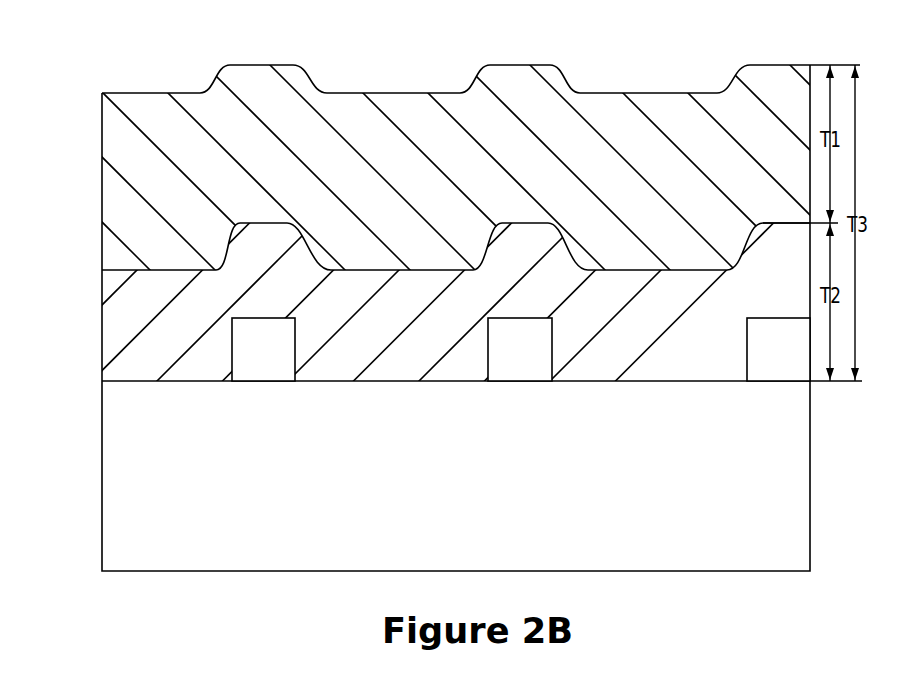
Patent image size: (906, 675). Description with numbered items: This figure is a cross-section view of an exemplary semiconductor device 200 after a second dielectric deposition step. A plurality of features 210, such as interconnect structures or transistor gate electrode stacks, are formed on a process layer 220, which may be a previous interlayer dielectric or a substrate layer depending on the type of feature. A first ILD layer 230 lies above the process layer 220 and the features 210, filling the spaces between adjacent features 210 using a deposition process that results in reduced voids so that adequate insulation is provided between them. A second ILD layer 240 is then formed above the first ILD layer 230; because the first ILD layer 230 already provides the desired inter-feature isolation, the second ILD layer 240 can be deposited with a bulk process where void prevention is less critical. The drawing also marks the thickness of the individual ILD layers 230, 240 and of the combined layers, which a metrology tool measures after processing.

The semiconductor device 200 is at (128, 53).
The features 210 is at (243, 341).
The process layer 220 is at (145, 468).
The first ILD layer 230 is at (118, 308).
The second ILD layer 240 is at (130, 208).